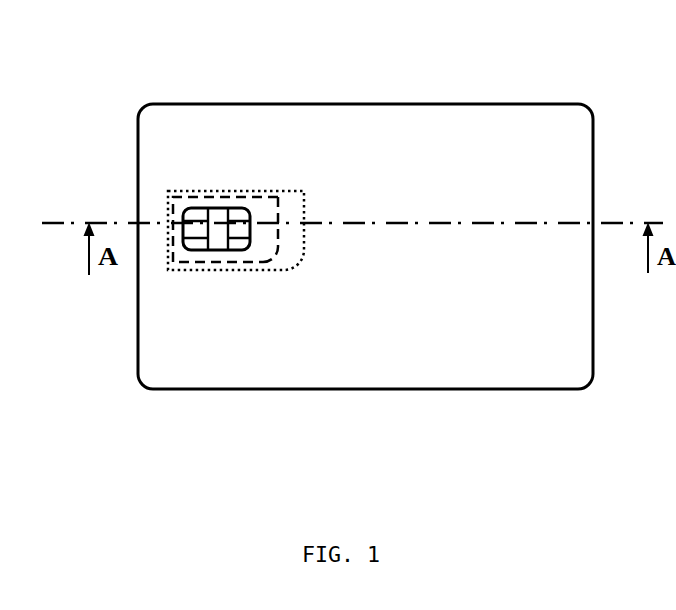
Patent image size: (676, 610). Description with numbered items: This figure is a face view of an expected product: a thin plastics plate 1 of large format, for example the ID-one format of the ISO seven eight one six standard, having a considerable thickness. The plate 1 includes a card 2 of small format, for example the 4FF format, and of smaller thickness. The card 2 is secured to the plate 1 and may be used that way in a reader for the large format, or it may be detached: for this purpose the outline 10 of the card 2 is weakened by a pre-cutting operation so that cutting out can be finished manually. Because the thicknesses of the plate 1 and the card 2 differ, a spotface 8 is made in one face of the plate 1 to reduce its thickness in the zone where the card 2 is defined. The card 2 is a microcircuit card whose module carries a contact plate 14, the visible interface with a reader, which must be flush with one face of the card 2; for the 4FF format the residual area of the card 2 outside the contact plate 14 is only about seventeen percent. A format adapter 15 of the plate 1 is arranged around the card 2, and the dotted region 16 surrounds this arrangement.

The plastics plate 1 is at (405, 115).
The card 2 is at (133, 229).
The outline 10 is at (133, 229).
The contact plate 14 is at (185, 207).
The format adapter 15 is at (293, 198).
The spotface 8 is at (278, 207).
The recess 16 is at (303, 245).